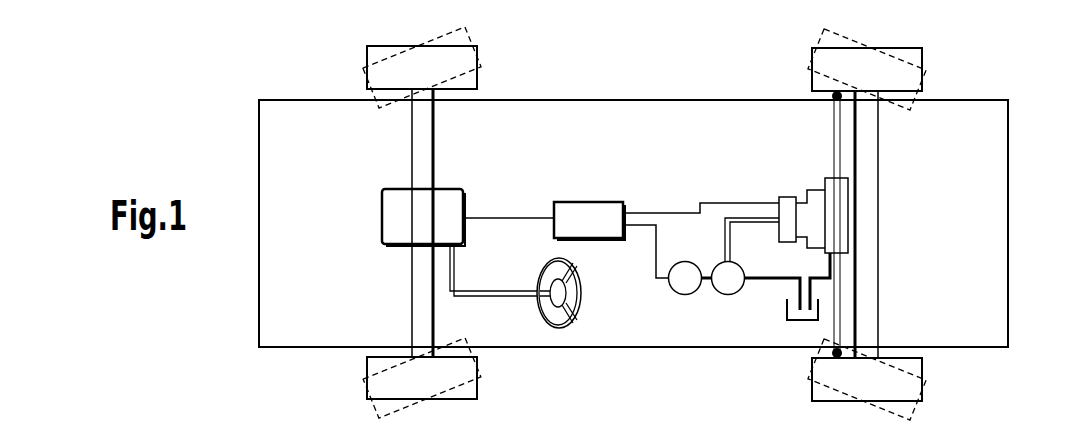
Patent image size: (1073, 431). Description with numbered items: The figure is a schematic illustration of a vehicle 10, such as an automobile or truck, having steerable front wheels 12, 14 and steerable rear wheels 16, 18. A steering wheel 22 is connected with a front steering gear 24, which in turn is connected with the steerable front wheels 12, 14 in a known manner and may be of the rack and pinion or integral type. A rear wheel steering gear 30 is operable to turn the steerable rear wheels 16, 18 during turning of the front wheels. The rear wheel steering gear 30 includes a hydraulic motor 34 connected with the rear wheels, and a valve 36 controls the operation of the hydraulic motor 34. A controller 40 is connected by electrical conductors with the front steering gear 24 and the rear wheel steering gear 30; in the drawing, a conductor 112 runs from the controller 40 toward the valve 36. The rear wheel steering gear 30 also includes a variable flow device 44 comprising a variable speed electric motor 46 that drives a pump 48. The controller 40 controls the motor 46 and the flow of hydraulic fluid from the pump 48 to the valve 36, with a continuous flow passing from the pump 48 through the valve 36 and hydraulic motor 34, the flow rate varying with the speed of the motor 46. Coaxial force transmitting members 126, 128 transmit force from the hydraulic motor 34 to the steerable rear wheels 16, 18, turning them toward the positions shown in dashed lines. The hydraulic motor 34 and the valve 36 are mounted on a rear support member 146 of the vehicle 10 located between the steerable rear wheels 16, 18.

The vehicle 10 is at (305, 95).
The steerable front wheel 12 is at (457, 68).
The steerable front wheel 14 is at (457, 388).
The steerable rear wheel 16 is at (823, 82).
The steerable rear wheel 18 is at (908, 367).
The steering wheel 22 is at (583, 300).
The front steering gear 24 is at (380, 218).
The rear wheel steering gear 30 is at (780, 178).
The hydraulic motor 34 is at (837, 210).
The valve 36 is at (788, 207).
The controller 40 is at (588, 202).
The variable flow device 44 is at (705, 315).
The variable speed electric motor 46 is at (683, 293).
The pump 48 is at (733, 293).
The control signal line 112 is at (710, 200).
The force transmitting member 126 is at (833, 142).
The force transmitting member 128 is at (837, 307).
The rear support member 146 is at (867, 280).